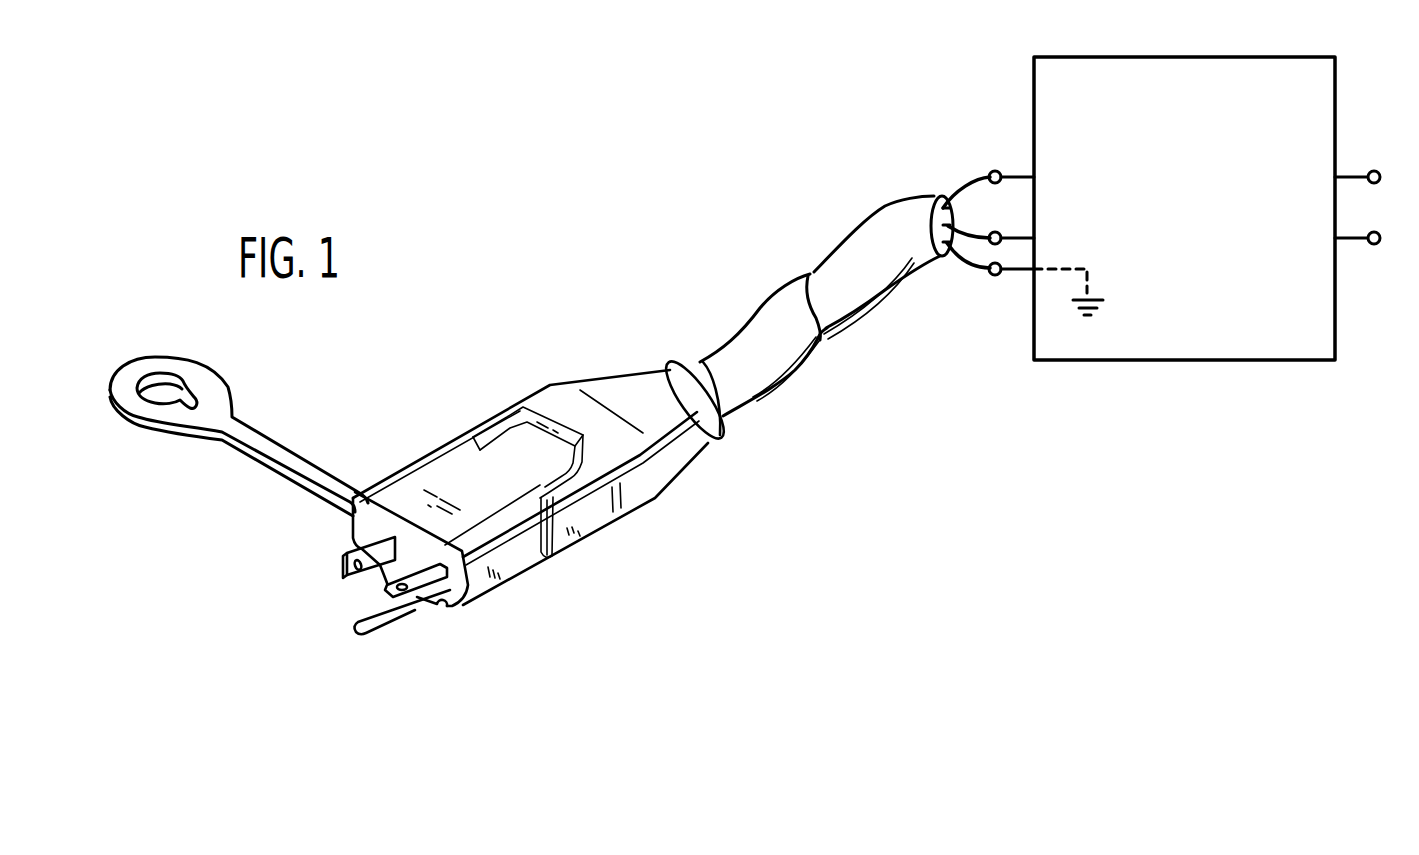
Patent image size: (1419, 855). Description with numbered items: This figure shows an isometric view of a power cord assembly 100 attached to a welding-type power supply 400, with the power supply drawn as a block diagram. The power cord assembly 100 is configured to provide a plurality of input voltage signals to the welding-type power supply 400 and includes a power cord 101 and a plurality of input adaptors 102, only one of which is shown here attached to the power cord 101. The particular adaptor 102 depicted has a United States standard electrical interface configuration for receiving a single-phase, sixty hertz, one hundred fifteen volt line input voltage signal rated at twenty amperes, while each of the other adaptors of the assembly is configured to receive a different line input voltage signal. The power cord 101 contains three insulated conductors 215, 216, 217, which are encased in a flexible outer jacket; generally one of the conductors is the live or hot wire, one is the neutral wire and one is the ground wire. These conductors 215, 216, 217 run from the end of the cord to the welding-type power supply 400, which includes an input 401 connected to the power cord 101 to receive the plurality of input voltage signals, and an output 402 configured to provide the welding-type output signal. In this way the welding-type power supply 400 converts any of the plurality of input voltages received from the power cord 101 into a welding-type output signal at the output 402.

The power cord assembly 100 is at (662, 234).
The power cord 101 is at (698, 491).
The input adaptors 102 is at (539, 596).
The insulated conductor 215 is at (960, 190).
The insulated conductor 216 is at (958, 247).
The insulated conductor 217 is at (958, 253).
The welding-type power supply 400 is at (1115, 52).
The input 401 is at (1010, 207).
The output 402 is at (1375, 202).